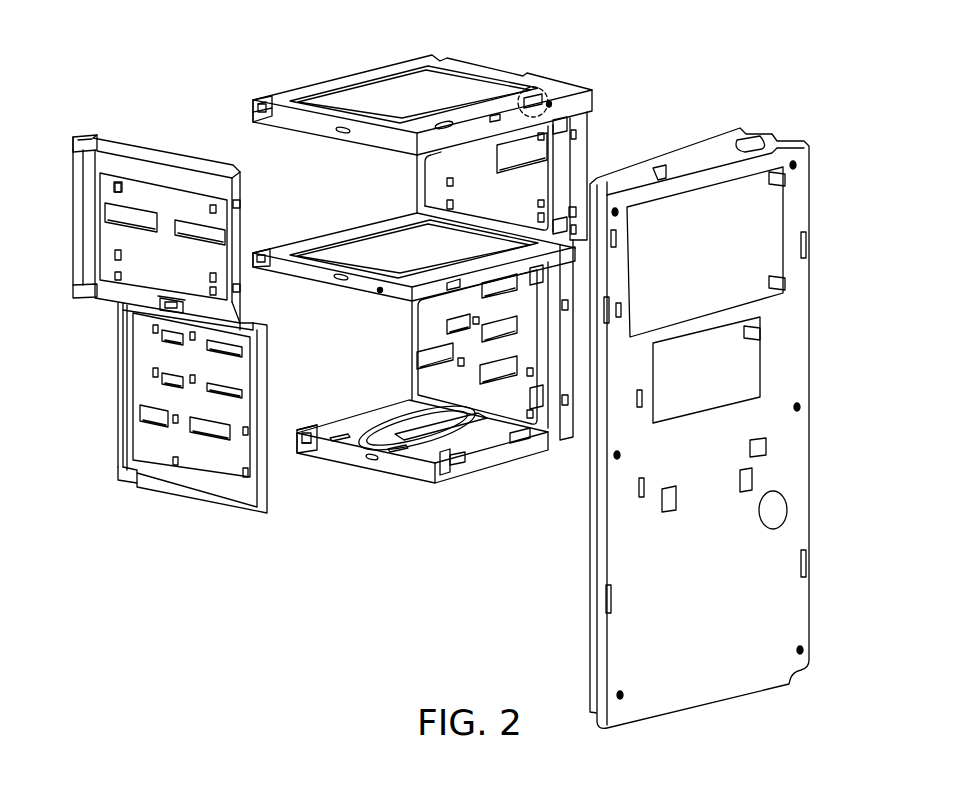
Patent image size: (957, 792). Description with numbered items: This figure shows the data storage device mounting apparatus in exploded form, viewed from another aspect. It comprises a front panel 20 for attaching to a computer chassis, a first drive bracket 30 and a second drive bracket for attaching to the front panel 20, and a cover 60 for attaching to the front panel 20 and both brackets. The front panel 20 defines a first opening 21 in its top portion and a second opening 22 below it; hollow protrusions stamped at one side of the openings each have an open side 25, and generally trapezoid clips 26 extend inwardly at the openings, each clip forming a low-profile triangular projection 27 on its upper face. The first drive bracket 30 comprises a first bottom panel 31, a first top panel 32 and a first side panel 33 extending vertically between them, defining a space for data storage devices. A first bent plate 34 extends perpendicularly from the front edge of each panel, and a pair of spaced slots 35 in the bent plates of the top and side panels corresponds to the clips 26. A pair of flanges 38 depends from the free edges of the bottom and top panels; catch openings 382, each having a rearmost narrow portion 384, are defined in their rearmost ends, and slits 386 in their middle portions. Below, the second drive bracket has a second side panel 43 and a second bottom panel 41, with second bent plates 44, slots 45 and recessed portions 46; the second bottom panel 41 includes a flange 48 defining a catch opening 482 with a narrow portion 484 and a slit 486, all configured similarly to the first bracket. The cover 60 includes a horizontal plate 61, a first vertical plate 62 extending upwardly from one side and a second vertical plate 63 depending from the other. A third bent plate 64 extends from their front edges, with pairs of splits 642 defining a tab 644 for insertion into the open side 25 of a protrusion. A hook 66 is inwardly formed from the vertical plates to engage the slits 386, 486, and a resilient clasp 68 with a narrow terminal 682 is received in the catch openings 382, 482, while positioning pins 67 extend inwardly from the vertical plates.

The front panel 20 is at (691, 407).
The first opening 21 is at (680, 217).
The second opening 22 is at (731, 364).
The open side 25 is at (638, 490).
The clips 26 is at (786, 283).
The triangular projection 27 is at (783, 182).
The first drive bracket 30 is at (440, 187).
The first bottom panel 31 is at (380, 232).
The first top panel 32 is at (413, 73).
The first side panel 33 is at (527, 187).
The first bent plate 34 is at (497, 117).
The slots 35 is at (540, 98).
The flanges 38 is at (262, 108).
The catch openings 382 is at (272, 118).
The narrow portion 384 is at (258, 106).
The slits 386 is at (343, 134).
The second bottom panel 41 is at (486, 443).
The second side panel 43 is at (432, 380).
The second bent plates 44 is at (523, 448).
The slots 45 is at (455, 460).
The recessed portions 46 is at (446, 476).
The flange 48 is at (425, 468).
The catch opening 482 is at (313, 455).
The narrow portion 484 is at (298, 444).
The slit 486 is at (372, 462).
The cover 60 is at (185, 283).
The horizontal plate 61 is at (255, 325).
The first vertical plate 62 is at (207, 184).
The second vertical plate 63 is at (231, 370).
The third bent plate 64 is at (236, 240).
The splits 642 is at (236, 207).
The tab 644 is at (238, 289).
The hook 66 is at (170, 307).
The positioning pins 67 is at (114, 186).
The resilient clasp 68 is at (92, 136).
The narrow terminal 682 is at (75, 137).